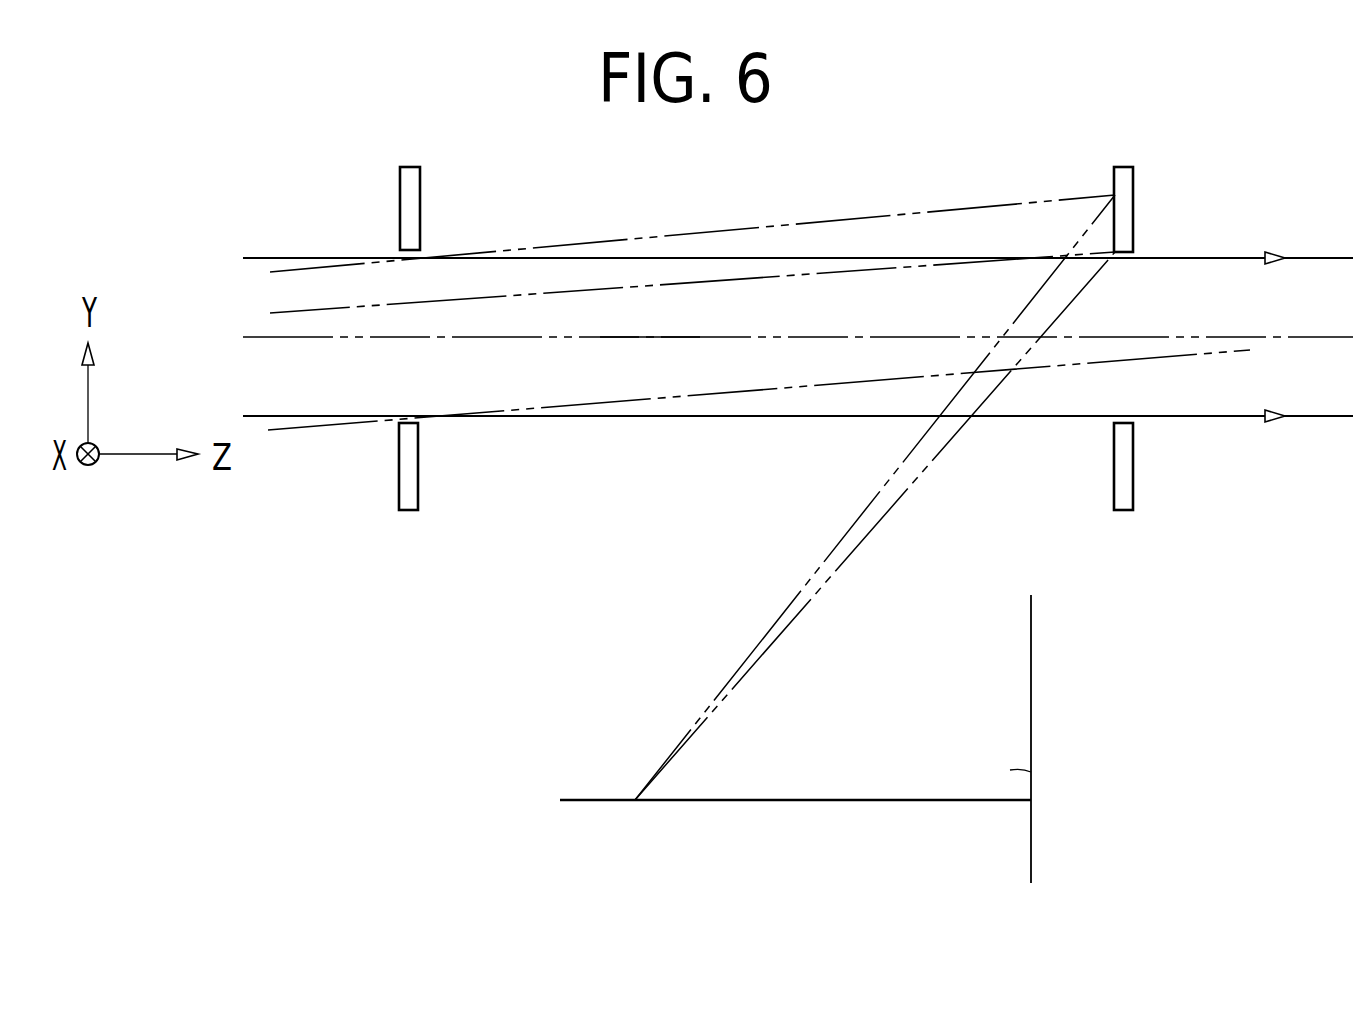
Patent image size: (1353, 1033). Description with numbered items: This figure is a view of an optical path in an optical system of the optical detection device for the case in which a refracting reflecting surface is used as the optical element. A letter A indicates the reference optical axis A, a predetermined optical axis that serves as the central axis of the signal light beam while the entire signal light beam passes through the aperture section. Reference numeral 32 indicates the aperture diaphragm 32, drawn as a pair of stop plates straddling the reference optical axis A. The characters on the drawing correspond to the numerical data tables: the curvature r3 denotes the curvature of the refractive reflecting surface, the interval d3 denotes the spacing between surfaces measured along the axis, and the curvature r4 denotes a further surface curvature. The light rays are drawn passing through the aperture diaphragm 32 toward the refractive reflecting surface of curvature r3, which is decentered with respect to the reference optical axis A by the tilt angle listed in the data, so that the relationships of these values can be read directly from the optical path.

The aperture diaphragm 32 is at (400, 193).
The curvature of the refractive reflecting surface r3 is at (1114, 182).
The interval between surfaces d3 is at (628, 337).
The curvature r4 is at (863, 798).
The reference optical axis A is at (337, 337).